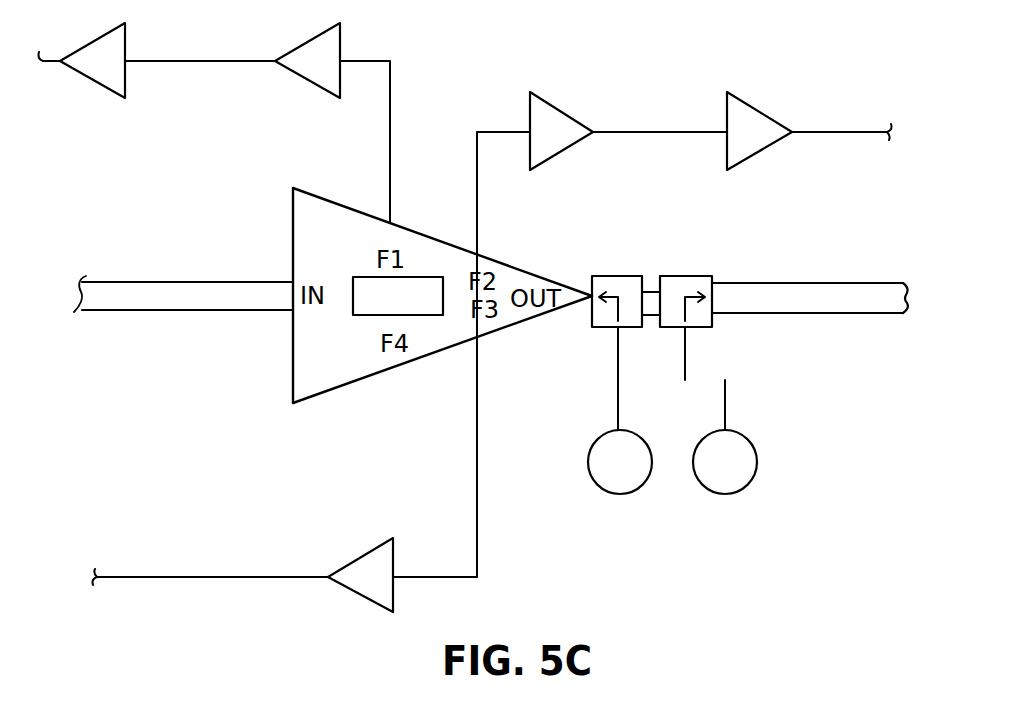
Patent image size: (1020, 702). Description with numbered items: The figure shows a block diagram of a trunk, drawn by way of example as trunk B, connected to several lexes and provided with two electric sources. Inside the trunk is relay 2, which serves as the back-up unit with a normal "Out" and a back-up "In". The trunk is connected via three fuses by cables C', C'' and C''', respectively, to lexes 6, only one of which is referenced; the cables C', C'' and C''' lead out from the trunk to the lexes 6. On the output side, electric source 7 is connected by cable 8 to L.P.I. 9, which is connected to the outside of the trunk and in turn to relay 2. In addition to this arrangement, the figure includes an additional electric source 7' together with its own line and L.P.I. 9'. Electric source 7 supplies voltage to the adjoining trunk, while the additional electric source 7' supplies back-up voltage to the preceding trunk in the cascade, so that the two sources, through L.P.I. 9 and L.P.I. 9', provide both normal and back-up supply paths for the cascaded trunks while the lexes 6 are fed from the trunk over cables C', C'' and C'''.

The relay 2 is at (423, 316).
The lex 6 is at (399, 553).
The electric source 7 is at (626, 474).
The additional electric source 7' is at (598, 378).
The cable 8 is at (748, 482).
The L.P.I. 9 is at (617, 275).
The L.P.I. 9' is at (686, 302).
The cable C' is at (215, 123).
The cable C'' is at (684, 334).
The cable C''' is at (315, 549).